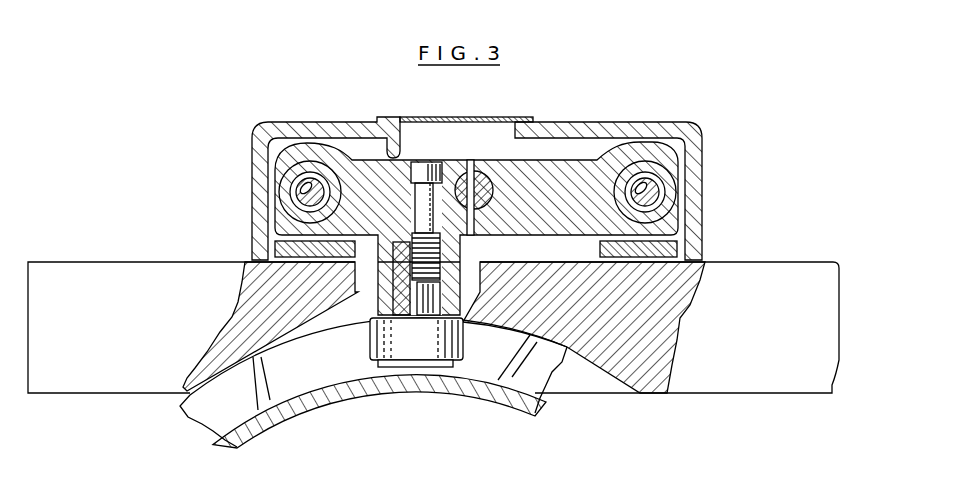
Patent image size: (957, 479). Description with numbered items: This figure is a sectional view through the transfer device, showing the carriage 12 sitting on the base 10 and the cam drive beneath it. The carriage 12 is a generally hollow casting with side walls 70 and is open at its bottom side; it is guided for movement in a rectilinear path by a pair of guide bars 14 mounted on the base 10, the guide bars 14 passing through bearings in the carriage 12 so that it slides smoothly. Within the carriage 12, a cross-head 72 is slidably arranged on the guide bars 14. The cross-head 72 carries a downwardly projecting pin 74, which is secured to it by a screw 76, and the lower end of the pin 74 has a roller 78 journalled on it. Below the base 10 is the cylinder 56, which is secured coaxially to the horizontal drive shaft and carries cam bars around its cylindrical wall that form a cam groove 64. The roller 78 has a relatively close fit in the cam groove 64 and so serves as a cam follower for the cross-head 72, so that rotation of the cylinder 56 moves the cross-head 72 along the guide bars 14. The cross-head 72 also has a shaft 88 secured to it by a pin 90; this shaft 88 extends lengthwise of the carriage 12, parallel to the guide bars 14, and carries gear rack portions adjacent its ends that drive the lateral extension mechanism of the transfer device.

The base 10 is at (783, 378).
The carriage 12 is at (707, 196).
The guide bars 14 is at (302, 193).
The cylinder 56 is at (381, 386).
The cam groove 64 is at (345, 340).
The side walls 70 is at (255, 165).
The cross-head 72 is at (576, 170).
The pin 74 is at (447, 308).
The screw 76 is at (430, 172).
The roller 78 is at (426, 351).
The shaft 88 is at (488, 194).
The pin 90 is at (472, 162).